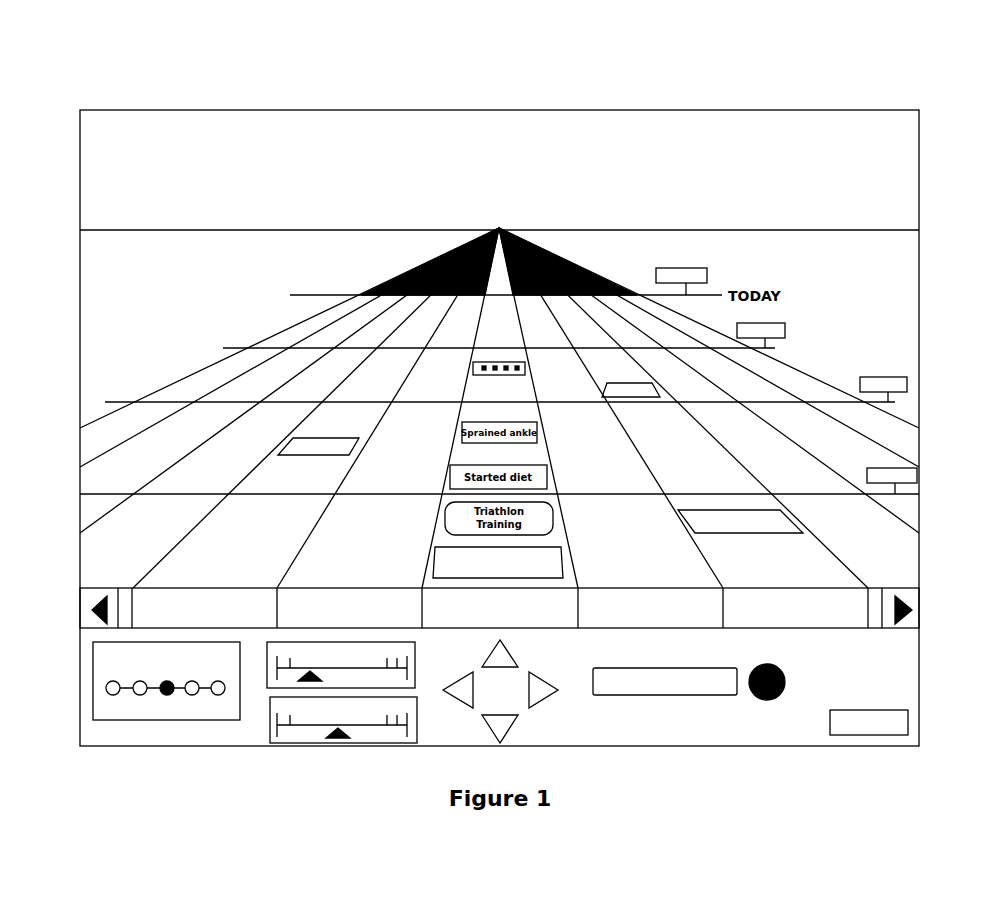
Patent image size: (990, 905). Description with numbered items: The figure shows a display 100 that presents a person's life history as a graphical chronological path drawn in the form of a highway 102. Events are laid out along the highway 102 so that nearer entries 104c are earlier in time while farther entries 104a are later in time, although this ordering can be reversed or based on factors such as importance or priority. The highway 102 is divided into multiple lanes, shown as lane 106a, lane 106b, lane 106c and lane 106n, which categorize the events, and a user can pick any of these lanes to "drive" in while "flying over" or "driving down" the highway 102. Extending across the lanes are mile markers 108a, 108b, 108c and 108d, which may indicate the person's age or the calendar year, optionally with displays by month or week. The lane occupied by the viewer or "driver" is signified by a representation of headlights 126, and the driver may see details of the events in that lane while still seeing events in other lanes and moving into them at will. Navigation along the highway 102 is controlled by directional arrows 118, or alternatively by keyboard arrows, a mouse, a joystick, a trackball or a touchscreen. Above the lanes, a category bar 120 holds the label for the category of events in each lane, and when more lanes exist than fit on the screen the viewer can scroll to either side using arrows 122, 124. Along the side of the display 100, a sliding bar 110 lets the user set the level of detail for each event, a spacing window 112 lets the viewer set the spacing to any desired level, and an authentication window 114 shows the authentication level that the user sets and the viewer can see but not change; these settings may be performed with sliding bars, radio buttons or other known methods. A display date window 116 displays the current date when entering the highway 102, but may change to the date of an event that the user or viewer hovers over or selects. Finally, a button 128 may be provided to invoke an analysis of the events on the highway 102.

The display 100 is at (650, 107).
The highway 102 is at (605, 275).
The farther entries 104a is at (655, 387).
The nearer entries 104c is at (559, 557).
The lane 106a is at (328, 318).
The lane 106b is at (287, 372).
The lane 106c is at (282, 418).
The lane 106n is at (788, 378).
The mile marker 108a is at (883, 465).
The mile marker 108b is at (880, 355).
The mile marker 108c is at (789, 314).
The mile marker 108d is at (705, 268).
The sliding bar 110 is at (270, 675).
The spacing window 112 is at (318, 732).
The authentication window 114 is at (100, 688).
The display date window 116 is at (685, 698).
The directional arrows 118 is at (540, 693).
The category bar 120 is at (78, 593).
The arrow 122 is at (90, 614).
The arrow 124 is at (500, 272).
The representation of headlights 126 is at (412, 270).
The button 128 is at (910, 723).